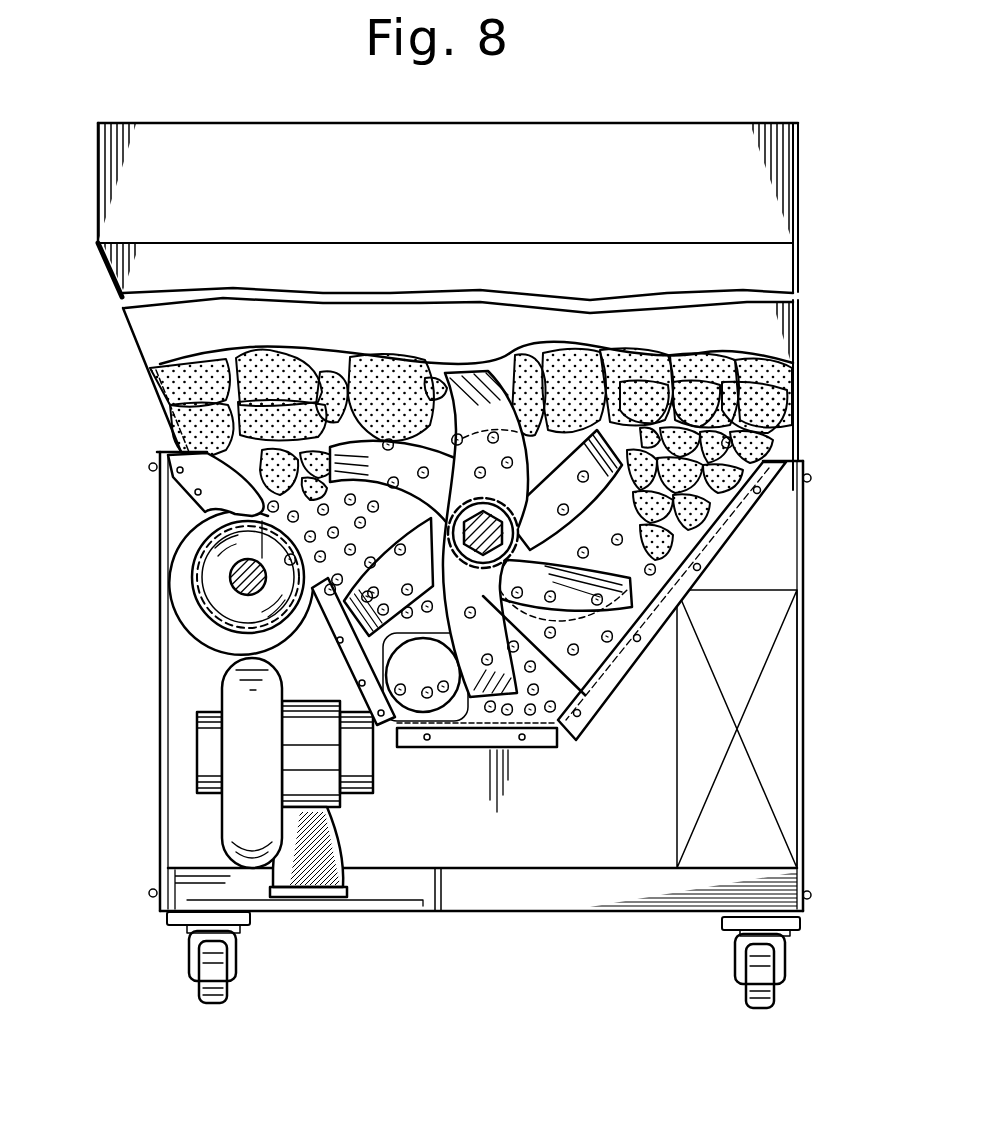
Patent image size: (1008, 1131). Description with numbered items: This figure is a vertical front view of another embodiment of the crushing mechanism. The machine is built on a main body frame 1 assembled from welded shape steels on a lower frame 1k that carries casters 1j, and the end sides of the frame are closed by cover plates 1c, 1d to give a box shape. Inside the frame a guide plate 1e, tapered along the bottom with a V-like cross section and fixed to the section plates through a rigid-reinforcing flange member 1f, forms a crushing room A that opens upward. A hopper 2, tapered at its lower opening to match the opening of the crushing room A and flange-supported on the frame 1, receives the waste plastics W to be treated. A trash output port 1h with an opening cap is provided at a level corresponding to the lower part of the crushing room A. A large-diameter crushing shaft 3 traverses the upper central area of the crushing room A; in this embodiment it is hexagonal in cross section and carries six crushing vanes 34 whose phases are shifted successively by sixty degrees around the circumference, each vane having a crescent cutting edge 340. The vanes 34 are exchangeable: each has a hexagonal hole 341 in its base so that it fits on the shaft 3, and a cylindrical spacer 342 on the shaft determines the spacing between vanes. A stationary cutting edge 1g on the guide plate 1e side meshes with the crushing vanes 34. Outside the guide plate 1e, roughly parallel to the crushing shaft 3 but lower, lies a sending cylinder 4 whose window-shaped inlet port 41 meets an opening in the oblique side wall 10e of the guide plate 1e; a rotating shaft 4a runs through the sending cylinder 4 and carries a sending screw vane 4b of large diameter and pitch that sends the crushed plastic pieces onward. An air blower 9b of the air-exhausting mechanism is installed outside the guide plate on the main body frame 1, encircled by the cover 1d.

The main body frame 1 is at (476, 763).
The cover plate 1c is at (160, 662).
The cover plate 1d is at (800, 767).
The guide plate 1e is at (747, 513).
The rigid-reinforcing flange member 1f is at (720, 543).
The stationary cutting edge 1g is at (612, 688).
The trash output port 1h is at (458, 745).
The casters 1j is at (222, 981).
The lower frame 1k is at (552, 900).
The hopper 2 is at (785, 214).
The crushing shaft 3 is at (615, 475).
The crushing vanes 34 is at (385, 432).
The crescent cutting edge 340 is at (428, 430).
The hexagonal hole 341 is at (531, 458).
The cylindrical spacer 342 is at (427, 445).
The sending cylinder 4 is at (189, 580).
The rotating shaft 4a is at (242, 580).
The sending screw vane 4b is at (217, 543).
The inlet port 41 is at (172, 488).
The air blower 9b is at (235, 738).
The oblique side wall 10e is at (316, 640).
The crushing room A is at (585, 650).
The waste plastics W is at (775, 405).